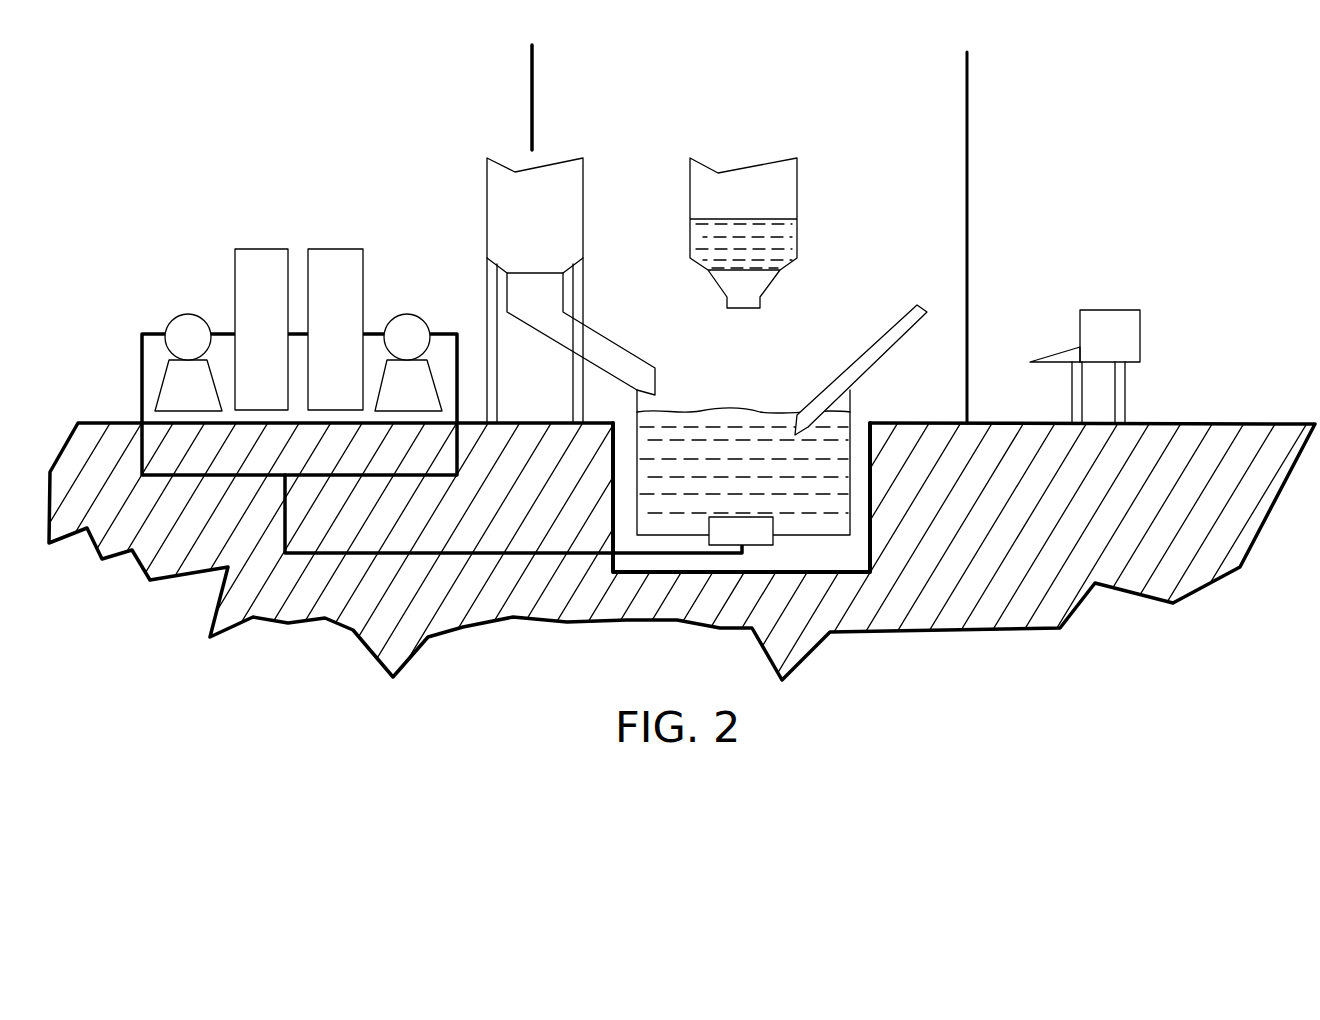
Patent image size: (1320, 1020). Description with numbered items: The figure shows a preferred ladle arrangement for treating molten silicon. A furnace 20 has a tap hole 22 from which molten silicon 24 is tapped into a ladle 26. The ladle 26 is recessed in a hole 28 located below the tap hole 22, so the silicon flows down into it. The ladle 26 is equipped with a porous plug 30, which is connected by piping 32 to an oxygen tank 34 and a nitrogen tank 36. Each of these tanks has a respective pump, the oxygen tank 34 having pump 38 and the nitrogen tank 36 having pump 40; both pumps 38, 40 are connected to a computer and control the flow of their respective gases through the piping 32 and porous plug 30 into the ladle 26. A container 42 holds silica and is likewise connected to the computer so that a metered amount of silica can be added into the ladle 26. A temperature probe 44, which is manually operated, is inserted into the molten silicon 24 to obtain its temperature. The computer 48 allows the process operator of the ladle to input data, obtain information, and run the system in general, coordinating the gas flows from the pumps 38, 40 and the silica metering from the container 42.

The furnace 20 is at (723, 121).
The tap hole 22 is at (797, 178).
The molten silicon 24 is at (731, 486).
The ladle 26 is at (850, 480).
The hole 28 is at (870, 545).
The porous plug 30 is at (753, 537).
The piping 32 is at (455, 557).
The oxygen tank 34 is at (257, 249).
The nitrogen tank 36 is at (337, 249).
The pump 38 is at (175, 326).
The pump 40 is at (407, 318).
The container 42 is at (585, 191).
The temperature probe 44 is at (886, 333).
The computer 48 is at (1140, 333).